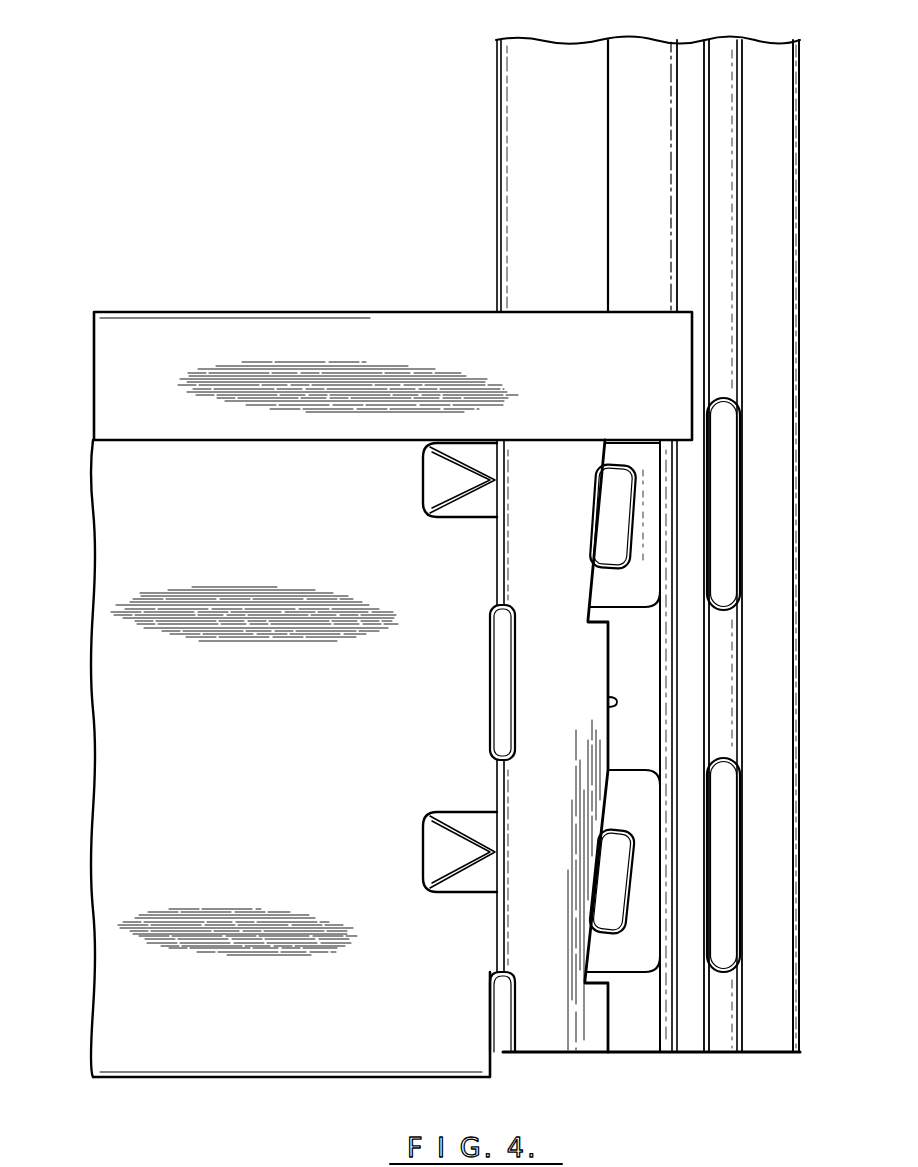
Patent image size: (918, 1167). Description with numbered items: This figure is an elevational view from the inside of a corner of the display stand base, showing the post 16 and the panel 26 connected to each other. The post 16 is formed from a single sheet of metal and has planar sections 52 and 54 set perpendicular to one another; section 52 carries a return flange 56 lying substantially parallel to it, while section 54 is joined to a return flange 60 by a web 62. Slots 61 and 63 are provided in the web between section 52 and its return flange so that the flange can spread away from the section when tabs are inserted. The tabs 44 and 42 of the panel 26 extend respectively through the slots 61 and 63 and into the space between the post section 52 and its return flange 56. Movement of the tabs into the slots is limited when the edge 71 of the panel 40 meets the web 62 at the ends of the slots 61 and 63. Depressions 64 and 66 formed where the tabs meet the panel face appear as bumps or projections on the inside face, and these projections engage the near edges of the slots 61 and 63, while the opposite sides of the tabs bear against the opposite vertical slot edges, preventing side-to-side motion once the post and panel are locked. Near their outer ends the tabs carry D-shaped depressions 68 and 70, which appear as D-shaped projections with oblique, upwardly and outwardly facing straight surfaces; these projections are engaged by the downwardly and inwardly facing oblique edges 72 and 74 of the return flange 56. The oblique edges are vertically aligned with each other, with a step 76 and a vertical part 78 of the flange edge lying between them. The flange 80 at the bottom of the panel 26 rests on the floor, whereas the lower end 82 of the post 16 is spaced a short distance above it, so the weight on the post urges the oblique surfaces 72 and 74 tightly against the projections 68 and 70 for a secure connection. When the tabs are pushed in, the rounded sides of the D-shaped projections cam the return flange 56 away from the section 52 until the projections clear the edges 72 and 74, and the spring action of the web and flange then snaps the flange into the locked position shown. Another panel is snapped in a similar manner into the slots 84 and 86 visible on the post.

The post 16 is at (478, 169).
The panel 26 is at (197, 296).
The panel 40 is at (223, 760).
The tab 42 is at (610, 818).
The tab 44 is at (608, 587).
The planar section 52 is at (643, 62).
The planar section 54 is at (743, 240).
The return flange 56 is at (590, 667).
The return flange 60 is at (706, 204).
The slot 61 is at (495, 565).
The web 62 is at (723, 293).
The slot 63 is at (495, 928).
The depression 64 is at (442, 491).
The depression 66 is at (430, 846).
The D-shaped depression 68 is at (608, 522).
The D-shaped depression 70 is at (606, 896).
The edge 71 is at (497, 714).
The oblique edge 72 is at (601, 504).
The oblique edge 74 is at (593, 964).
The step 76 is at (596, 624).
The vertical part 78 is at (608, 706).
The flange 80 is at (335, 1080).
The lower end 82 is at (594, 1052).
The slot 84 is at (722, 530).
The slot 86 is at (725, 868).